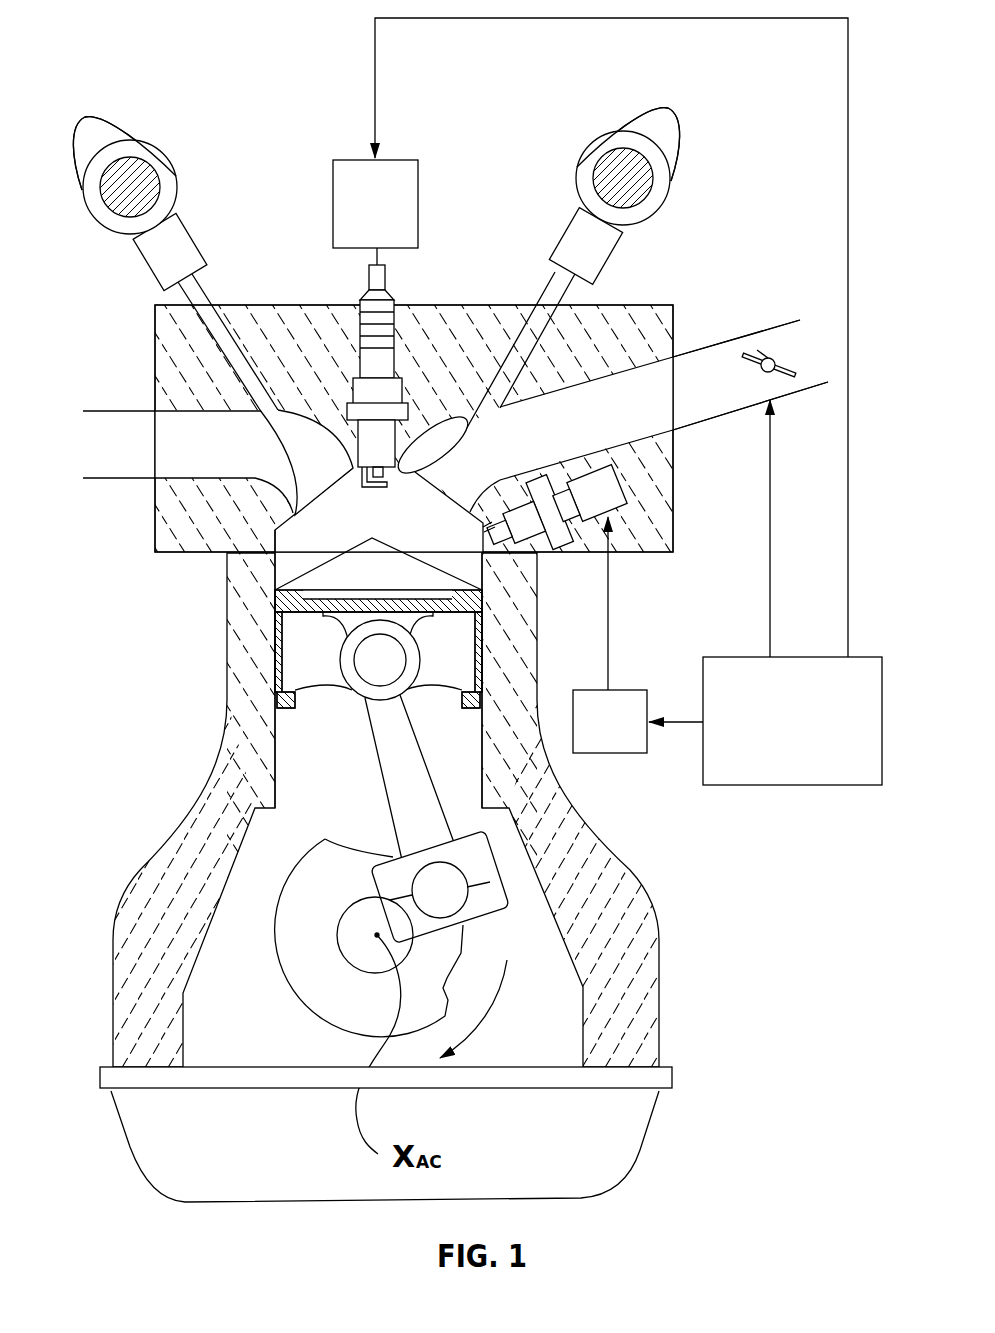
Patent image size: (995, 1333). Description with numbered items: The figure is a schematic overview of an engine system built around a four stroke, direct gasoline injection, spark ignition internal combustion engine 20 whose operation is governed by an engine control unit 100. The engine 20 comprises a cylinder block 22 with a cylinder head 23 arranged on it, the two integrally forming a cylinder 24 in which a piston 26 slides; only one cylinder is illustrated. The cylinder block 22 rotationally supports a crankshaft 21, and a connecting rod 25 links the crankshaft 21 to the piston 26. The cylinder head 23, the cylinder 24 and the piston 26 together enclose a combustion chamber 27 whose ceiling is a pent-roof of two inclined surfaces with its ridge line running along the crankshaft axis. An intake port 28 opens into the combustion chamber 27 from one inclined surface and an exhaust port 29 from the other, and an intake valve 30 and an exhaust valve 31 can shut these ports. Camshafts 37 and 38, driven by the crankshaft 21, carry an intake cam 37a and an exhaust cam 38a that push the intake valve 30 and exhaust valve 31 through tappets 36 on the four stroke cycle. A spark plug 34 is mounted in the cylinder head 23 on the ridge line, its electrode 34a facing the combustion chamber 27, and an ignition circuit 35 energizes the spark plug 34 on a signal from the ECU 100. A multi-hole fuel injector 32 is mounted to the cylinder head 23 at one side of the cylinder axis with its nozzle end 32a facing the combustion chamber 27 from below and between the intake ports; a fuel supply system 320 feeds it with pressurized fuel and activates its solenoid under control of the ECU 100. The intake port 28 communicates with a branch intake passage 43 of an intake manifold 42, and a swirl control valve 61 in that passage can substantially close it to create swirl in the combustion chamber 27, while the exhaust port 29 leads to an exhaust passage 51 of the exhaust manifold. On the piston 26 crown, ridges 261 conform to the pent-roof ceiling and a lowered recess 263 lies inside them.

The internal combustion engine 20 is at (712, 133).
The crankshaft 21 is at (338, 932).
The cylinder block 22 is at (386, 877).
The cylinder head 23 is at (637, 305).
The cylinder 24 is at (277, 742).
The connecting rod 25 is at (422, 785).
The piston 26 is at (319, 612).
The ridge 261 is at (268, 537).
The recess 263 is at (367, 590).
The combustion chamber 27 is at (396, 531).
The intake port 28 is at (648, 400).
The exhaust port 29 is at (174, 437).
The intake valve 30 is at (483, 422).
The exhaust valve 31 is at (278, 423).
The fuel injector 32 is at (594, 549).
The injection hole 32a is at (458, 538).
The fuel supply system 320 is at (631, 700).
The spark plug 34 is at (433, 367).
The electrode 34a is at (445, 478).
The ignition circuit 35 is at (400, 158).
The tappet 36 is at (178, 248).
The camshaft 37 is at (592, 175).
The intake cam 37a is at (652, 107).
The camshaft 38 is at (158, 177).
The exhaust cam 38a is at (113, 123).
The intake manifold 42 is at (750, 375).
The branch intake passage 43 is at (778, 335).
The exhaust passage 51 is at (135, 418).
The swirl control valve 61 is at (757, 350).
The engine control unit 100 is at (773, 787).